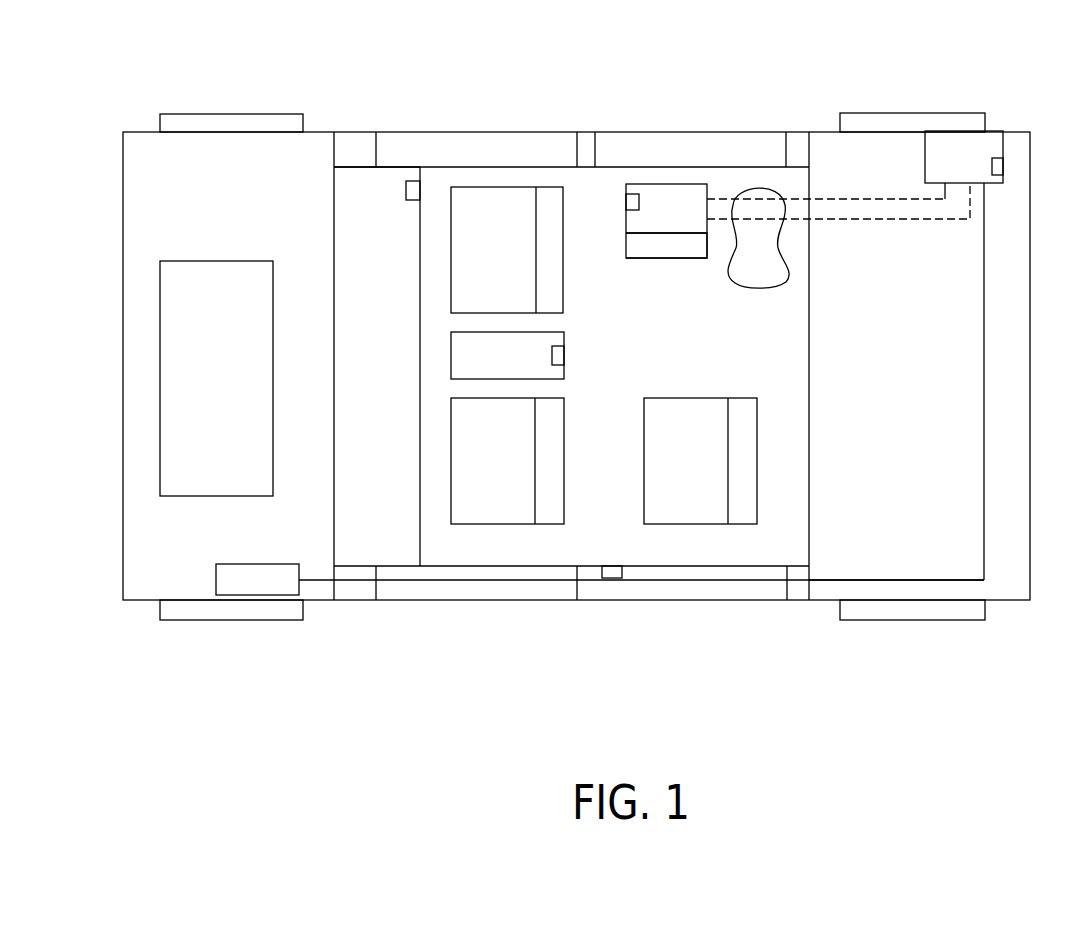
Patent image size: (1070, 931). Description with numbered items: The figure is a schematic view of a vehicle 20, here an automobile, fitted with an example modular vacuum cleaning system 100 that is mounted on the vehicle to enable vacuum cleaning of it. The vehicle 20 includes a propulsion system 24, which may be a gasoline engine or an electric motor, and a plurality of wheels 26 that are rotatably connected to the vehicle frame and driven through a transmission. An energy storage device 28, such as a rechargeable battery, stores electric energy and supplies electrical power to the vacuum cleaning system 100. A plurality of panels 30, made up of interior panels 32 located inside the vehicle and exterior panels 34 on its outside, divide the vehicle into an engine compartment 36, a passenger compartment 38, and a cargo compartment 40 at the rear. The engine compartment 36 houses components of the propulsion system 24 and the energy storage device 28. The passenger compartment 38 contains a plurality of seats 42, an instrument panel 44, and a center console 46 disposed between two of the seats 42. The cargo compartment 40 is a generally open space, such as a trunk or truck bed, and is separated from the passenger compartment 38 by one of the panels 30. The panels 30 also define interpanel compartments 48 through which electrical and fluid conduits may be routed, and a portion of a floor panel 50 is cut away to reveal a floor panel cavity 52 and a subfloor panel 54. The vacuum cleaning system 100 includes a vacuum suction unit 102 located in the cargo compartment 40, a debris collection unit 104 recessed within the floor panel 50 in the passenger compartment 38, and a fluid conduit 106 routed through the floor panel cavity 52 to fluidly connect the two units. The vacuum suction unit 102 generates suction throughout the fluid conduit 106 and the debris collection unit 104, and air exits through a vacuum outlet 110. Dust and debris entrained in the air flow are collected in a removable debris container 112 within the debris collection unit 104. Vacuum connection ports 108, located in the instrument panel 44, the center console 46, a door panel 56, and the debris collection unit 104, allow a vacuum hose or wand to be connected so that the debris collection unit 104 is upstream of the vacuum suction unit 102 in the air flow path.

The vehicle 20 is at (132, 70).
The propulsion system 24 is at (237, 260).
The wheels 26 is at (248, 113).
The energy storage device 28 is at (246, 562).
The panels 30 is at (404, 620).
The interior panels 32 is at (466, 568).
The exterior panels 34 is at (513, 603).
The engine compartment 36 is at (270, 198).
The passenger compartment 38 is at (611, 476).
The cargo compartment 40 is at (915, 391).
The seats 42 is at (527, 524).
The instrument panel 44 is at (420, 322).
The center console 46 is at (557, 332).
The interpanel compartments 48 is at (520, 143).
The floor panel 50 is at (778, 553).
The floor panel cavity 52 is at (763, 262).
The subfloor panel 54 is at (775, 272).
The door panel 56 is at (708, 568).
The vacuum cleaning system 100 is at (719, 168).
The vacuum suction unit 102 is at (905, 145).
The debris collection unit 104 is at (636, 160).
The fluid conduit 106 is at (757, 200).
The vacuum connection ports 108 is at (420, 187).
The vacuum outlet 110 is at (993, 158).
The debris container 112 is at (642, 258).